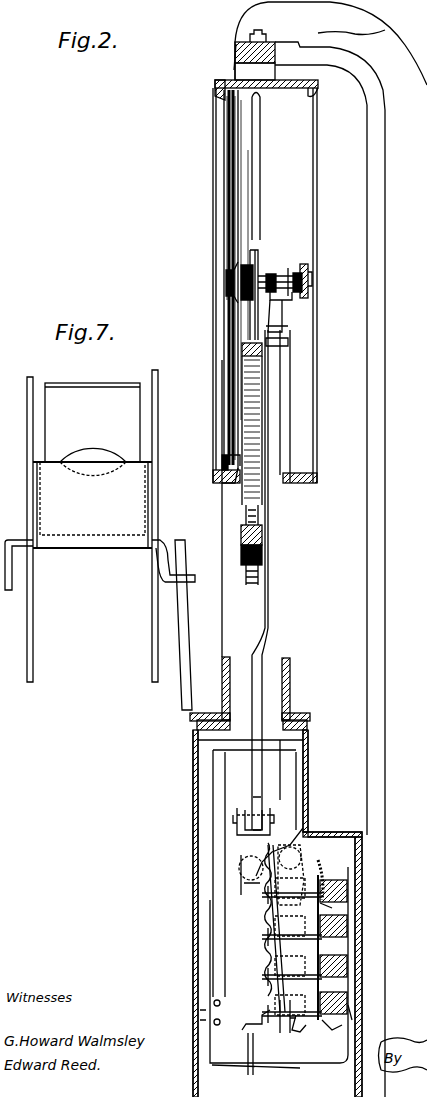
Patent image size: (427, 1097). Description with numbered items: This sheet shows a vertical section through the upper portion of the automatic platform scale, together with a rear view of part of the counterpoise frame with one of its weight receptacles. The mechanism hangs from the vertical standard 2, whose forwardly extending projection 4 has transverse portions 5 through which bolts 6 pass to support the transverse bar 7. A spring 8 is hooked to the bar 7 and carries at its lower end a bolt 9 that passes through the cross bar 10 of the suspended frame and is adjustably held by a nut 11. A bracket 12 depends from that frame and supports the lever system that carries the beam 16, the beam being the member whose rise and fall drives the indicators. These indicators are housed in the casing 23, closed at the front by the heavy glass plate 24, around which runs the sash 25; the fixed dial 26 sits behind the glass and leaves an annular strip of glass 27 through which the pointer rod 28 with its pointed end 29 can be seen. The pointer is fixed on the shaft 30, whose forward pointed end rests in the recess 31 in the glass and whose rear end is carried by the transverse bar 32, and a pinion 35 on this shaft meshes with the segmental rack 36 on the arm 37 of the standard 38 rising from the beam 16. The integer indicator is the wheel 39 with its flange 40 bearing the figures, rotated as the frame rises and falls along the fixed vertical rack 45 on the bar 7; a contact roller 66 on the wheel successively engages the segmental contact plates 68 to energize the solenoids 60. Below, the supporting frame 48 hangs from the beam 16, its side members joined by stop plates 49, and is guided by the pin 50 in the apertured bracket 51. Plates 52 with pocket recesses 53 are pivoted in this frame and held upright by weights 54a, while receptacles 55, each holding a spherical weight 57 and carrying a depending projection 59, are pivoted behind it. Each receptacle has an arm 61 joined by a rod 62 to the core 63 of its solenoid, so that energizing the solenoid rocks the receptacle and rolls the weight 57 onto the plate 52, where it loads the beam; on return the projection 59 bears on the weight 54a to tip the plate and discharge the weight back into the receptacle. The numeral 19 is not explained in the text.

In FIG. 2, the vertical standard 2 is at (366, 657).
In FIG. 2, the forwardly extending projection 4 is at (383, 32).
In FIG. 2, the transverse portions 5 is at (266, 50).
In FIG. 2, the bolts 6 is at (259, 118).
In FIG. 2, the transverse bar 7 is at (284, 628).
In FIG. 2, the spring 8 is at (254, 494).
In FIG. 2, the bolt 9 is at (246, 515).
In FIG. 2, the cross bar 10 is at (241, 537).
In FIG. 2, the nut 11 is at (241, 560).
In FIG. 2, the bracket 12 is at (196, 786).
In FIG. 2, the beam 16 is at (252, 800).
In FIG. 2, the casing wall 19 is at (194, 972).
In FIG. 2, the casing 23 is at (316, 92).
In FIG. 2, the plate of heavy glass 24 is at (225, 146).
In FIG. 2, the sash or frame 25 is at (215, 95).
In FIG. 2, the dial 26 is at (233, 160).
In FIG. 2, the annular strip of glass 27 is at (222, 458).
In FIG. 2, the pointer rod 28 is at (238, 210).
In FIG. 2, the pointed end 29 is at (226, 112).
In FIG. 2, the shaft 30 is at (296, 272).
In FIG. 2, the recess 31 is at (226, 284).
In FIG. 2, the transverse bar or frame member 32 is at (312, 277).
In FIG. 2, the pinion 35 is at (268, 274).
In FIG. 2, the rack 36 is at (280, 300).
In FIG. 2, the arm 37 is at (278, 326).
In FIG. 2, the standard 38 is at (281, 418).
In FIG. 2, the rotatable member or wheel 39 is at (245, 170).
In FIG. 2, the flange 40 is at (232, 80).
In FIG. 2, the vertical rack 45 is at (254, 252).
In FIG. 2, the supporting frame 48 is at (238, 858).
In FIG. 7, the supporting frame 48 is at (148, 647).
In FIG. 2, the transverse bars or plates 49 is at (266, 915).
In FIG. 2, the guide pin 50 is at (248, 1070).
In FIG. 2, the apertured bracket 51 is at (290, 1066).
In FIG. 2, the plates 52 is at (209, 905).
In FIG. 7, the plates 52 is at (60, 390).
In FIG. 2, the recesses 53 is at (303, 828).
In FIG. 2, the weights 54a is at (236, 1030).
In FIG. 7, the weights 54a is at (182, 695).
In FIG. 2, the receptacles 55 is at (332, 870).
In FIG. 7, the receptacles 55 is at (124, 542).
In FIG. 2, the weight 57 is at (320, 858).
In FIG. 7, the weight 57 is at (72, 456).
In FIG. 2, the projection 59 is at (320, 912).
In FIG. 7, the projection 59 is at (156, 582).
In FIG. 2, the solenoids 60 is at (347, 975).
In FIG. 2, the arm 61 is at (282, 1033).
In FIG. 2, the rod 62 is at (298, 1020).
In FIG. 2, the core 63 is at (346, 1018).
In FIG. 2, the contact roller 66 is at (234, 58).
In FIG. 2, the contact plates 68 is at (236, 478).